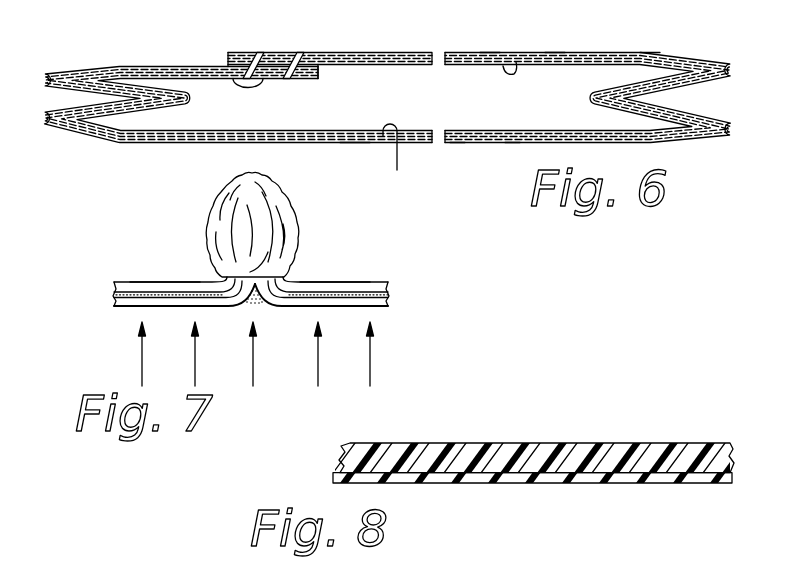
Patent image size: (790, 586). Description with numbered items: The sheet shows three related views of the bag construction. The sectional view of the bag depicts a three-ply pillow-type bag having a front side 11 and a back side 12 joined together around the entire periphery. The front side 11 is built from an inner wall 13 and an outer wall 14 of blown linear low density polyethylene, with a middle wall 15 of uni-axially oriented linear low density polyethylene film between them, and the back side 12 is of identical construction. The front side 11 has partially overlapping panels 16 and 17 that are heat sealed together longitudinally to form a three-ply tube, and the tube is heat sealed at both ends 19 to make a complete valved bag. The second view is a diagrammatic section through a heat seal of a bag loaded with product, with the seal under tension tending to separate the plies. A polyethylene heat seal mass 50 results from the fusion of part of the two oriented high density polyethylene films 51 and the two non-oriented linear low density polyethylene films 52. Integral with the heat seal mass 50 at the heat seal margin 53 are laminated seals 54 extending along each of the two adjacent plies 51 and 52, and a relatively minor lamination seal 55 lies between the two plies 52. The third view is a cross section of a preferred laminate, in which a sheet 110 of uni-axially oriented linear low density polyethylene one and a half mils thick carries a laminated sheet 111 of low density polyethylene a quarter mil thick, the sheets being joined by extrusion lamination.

In FIG. 6, the front side 11 is at (410, 50).
In FIG. 6, the back side 12 is at (352, 152).
In FIG. 6, the inner wall 13 is at (508, 35).
In FIG. 6, the outer wall 14 is at (556, 52).
In FIG. 6, the middle wall 15 is at (652, 58).
In FIG. 6, the overlapping panel 16 is at (282, 52).
In FIG. 6, the overlapping panel 17 is at (229, 72).
In FIG. 6, the ends 19 is at (486, 30).
In FIG. 7, the heat seal mass 50 is at (277, 236).
In FIG. 7, the oriented high density polyethylene films 51 is at (131, 282).
In FIG. 7, the non-oriented linear low density polyethylene films 52 is at (117, 303).
In FIG. 7, the heat seal margin 53 is at (282, 282).
In FIG. 7, the laminated seals 54 is at (147, 296).
In FIG. 7, the lamination seal 55 is at (253, 292).
In FIG. 8, the sheet of uni-axially oriented linear low density polyethylene 110 is at (444, 455).
In FIG. 8, the sheet of low density polyethylene 111 is at (338, 478).